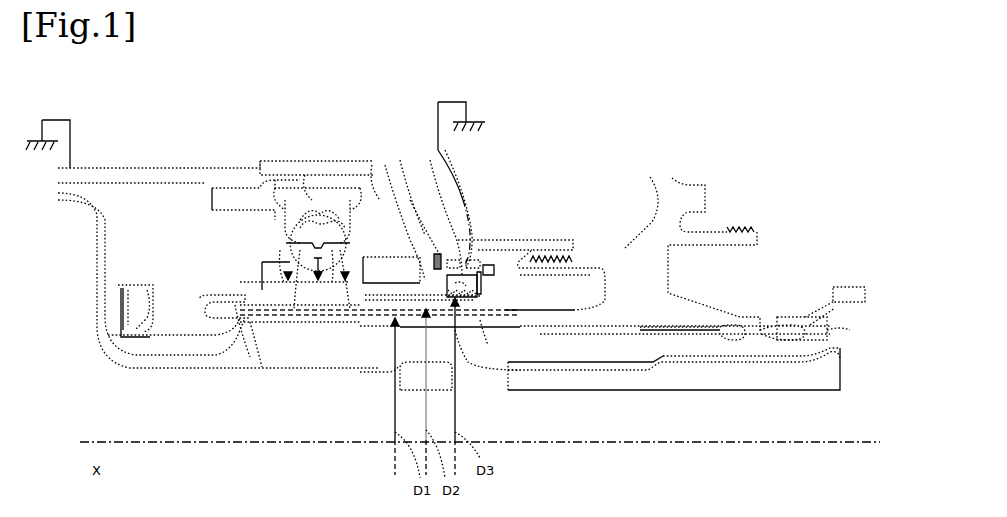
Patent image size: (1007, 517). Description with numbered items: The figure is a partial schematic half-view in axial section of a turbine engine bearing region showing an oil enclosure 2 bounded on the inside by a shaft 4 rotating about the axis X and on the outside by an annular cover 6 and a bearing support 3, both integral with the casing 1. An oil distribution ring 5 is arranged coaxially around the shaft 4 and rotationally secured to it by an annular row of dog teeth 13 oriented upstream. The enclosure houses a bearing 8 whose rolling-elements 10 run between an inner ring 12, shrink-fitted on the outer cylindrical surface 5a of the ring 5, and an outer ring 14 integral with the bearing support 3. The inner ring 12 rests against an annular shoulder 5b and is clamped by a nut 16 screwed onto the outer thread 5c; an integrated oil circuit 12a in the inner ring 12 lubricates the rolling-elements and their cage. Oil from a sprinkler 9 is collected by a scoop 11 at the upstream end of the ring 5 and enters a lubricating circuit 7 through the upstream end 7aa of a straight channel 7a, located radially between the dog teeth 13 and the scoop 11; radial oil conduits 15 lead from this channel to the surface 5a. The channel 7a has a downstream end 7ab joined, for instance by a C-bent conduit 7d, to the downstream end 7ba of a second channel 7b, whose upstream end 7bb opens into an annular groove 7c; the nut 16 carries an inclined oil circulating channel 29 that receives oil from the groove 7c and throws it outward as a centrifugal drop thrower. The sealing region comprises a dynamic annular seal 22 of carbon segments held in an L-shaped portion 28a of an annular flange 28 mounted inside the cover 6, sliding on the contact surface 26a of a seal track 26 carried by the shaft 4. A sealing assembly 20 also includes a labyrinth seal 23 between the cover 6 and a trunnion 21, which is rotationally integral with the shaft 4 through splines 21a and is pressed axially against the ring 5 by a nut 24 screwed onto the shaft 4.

The casing 1 is at (60, 120).
The oil enclosure 2 is at (170, 200).
The bearing support 3 is at (190, 172).
The shaft 4 is at (252, 350).
The oil distribution ring 5 is at (312, 330).
The outer cylindrical surface 5a is at (332, 300).
The annular shoulder 5b is at (255, 278).
The outer thread 5c is at (378, 280).
The annular cover 6 is at (456, 180).
The lubricating circuit 7 is at (352, 320).
The channel 7a is at (388, 333).
The upstream end 7aa is at (264, 330).
The downstream end 7ab is at (462, 333).
The channel 7b is at (420, 330).
The downstream end 7ba is at (482, 305).
The upstream end 7bb is at (408, 260).
The annular groove 7c is at (376, 250).
The C-bent conduit 7d is at (484, 326).
The bearing 8 is at (226, 239).
The oil sprinkler 9 is at (112, 336).
The rolling-elements 10 is at (286, 246).
The scoop 11 is at (236, 290).
The inner ring 12 is at (262, 263).
The integrated oil circuit 12a is at (300, 200).
The dog teeth 13 is at (243, 330).
The outer ring 14 is at (320, 200).
The oil conduits 15 is at (288, 300).
The nut 16 is at (420, 258).
The brake unit 20 is at (531, 246).
The trunnion 21 is at (665, 270).
The splines 21a is at (692, 328).
The dynamic annular seal 22 is at (504, 282).
The labyrinth seal 23 is at (585, 258).
The nut 24 is at (790, 328).
The seal track 26 is at (434, 324).
The contact surface 26a is at (481, 294).
The annular flange 28 is at (475, 258).
The portion 28a is at (442, 255).
The oil circulating channel 29 is at (405, 225).